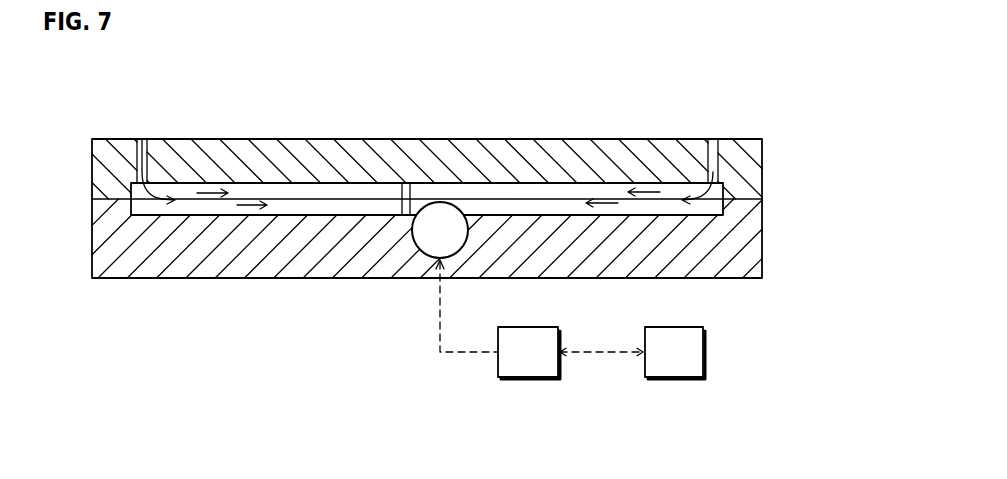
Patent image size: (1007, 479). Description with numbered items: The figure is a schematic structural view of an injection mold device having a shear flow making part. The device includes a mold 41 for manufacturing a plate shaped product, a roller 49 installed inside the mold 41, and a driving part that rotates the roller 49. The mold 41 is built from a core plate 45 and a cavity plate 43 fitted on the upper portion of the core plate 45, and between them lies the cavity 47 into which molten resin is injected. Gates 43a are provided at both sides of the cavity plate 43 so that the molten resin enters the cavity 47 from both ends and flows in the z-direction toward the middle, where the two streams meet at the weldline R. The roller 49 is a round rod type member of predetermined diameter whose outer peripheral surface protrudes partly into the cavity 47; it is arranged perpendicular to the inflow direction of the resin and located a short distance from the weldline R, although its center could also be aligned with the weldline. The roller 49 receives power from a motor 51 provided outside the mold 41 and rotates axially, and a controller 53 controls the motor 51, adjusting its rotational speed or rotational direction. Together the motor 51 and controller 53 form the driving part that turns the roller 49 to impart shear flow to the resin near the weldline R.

The mold 41 is at (777, 160).
The cavity plate 43 is at (247, 168).
The gates 43a is at (142, 142).
The core plate 45 is at (230, 253).
The cavity 47 is at (495, 198).
The roller 49 is at (430, 238).
The motor 51 is at (532, 380).
The controller 53 is at (675, 378).
The weldline R is at (413, 192).